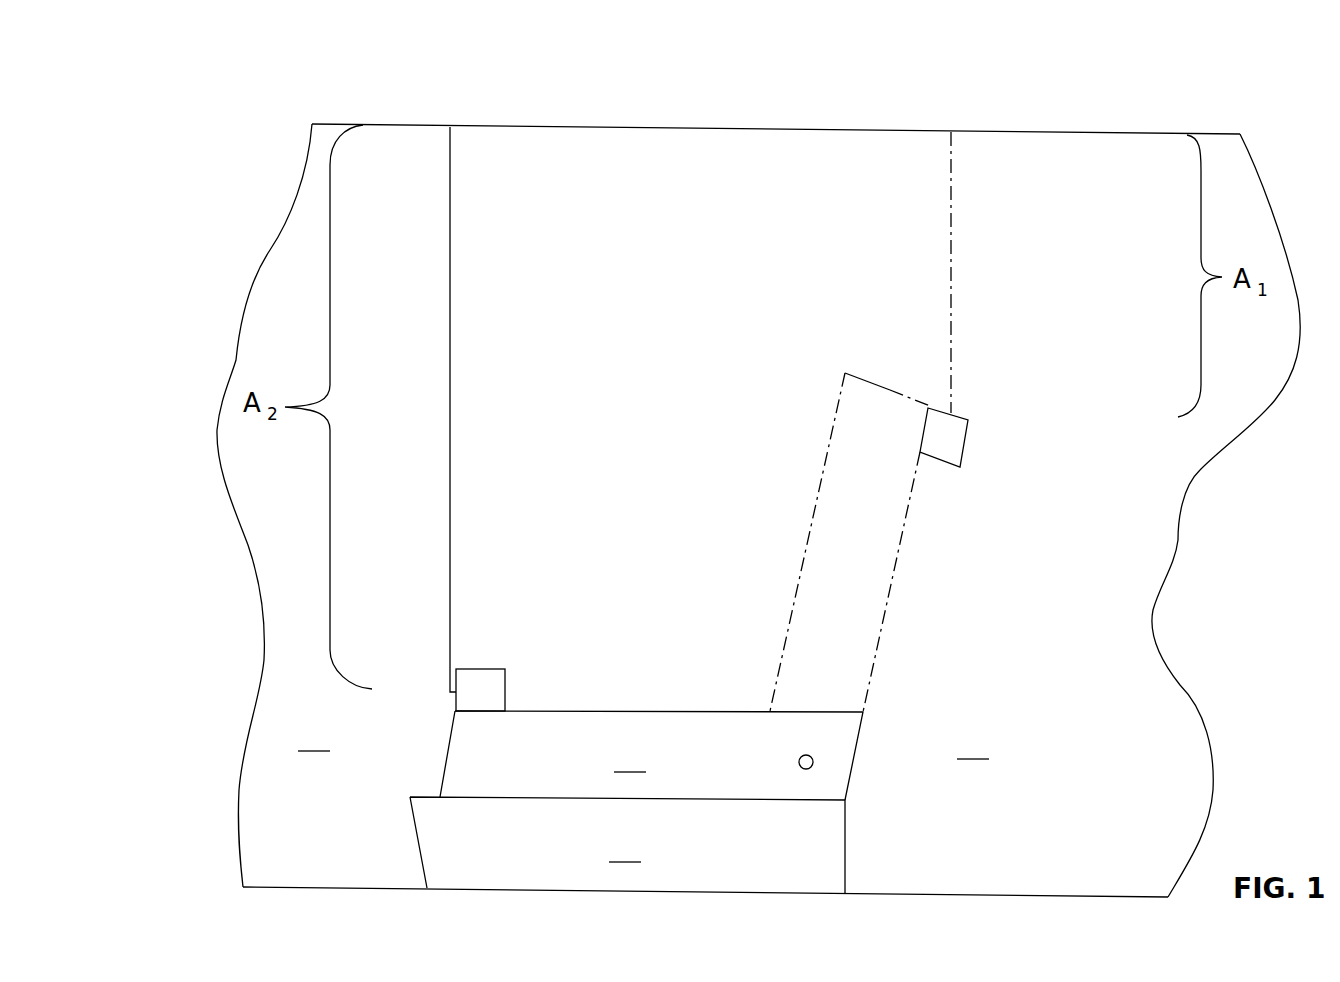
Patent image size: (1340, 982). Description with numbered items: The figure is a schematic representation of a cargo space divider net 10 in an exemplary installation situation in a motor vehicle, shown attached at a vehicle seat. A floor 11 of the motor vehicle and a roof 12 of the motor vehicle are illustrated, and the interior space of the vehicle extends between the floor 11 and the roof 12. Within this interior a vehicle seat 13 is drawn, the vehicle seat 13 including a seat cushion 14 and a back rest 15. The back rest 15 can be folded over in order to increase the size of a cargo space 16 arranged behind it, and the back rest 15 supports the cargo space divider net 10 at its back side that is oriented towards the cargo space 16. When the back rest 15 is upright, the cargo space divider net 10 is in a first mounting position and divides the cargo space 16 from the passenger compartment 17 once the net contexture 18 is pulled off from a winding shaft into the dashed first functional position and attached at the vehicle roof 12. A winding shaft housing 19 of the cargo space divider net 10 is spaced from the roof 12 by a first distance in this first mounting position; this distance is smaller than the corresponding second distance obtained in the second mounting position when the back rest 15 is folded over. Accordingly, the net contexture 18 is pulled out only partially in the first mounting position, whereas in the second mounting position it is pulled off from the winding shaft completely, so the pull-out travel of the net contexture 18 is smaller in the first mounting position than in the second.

The cargo space divider net 10 is at (520, 656).
The floor 11 is at (1065, 895).
The roof 12 is at (727, 127).
The vehicle seat 13 is at (372, 802).
The seat cushion 14 is at (627, 845).
The back rest 15 is at (870, 578).
The cargo space 16 is at (974, 746).
The passenger compartment 17 is at (315, 738).
The net contexture 18 is at (450, 372).
The winding shaft housing 19 is at (505, 692).